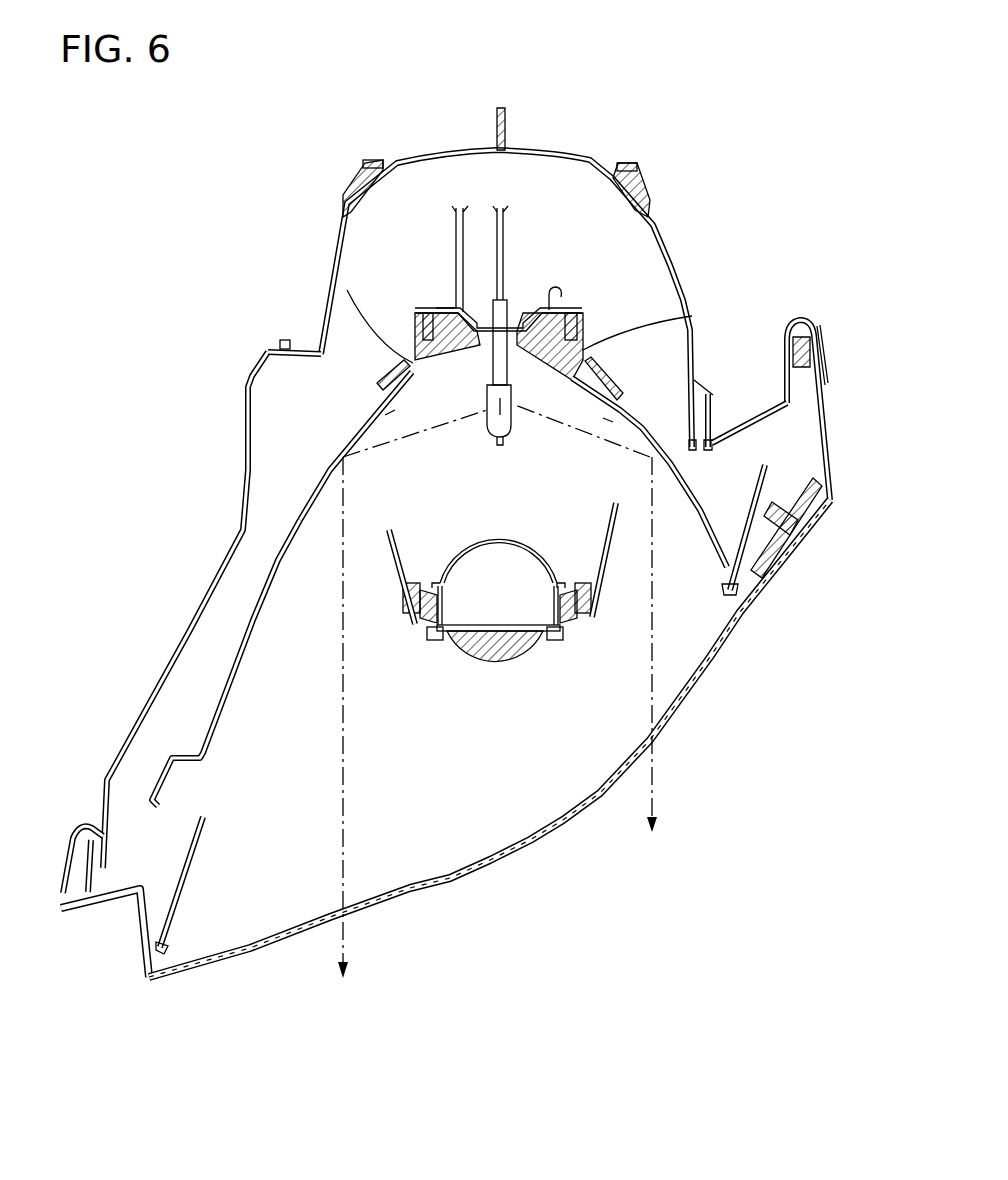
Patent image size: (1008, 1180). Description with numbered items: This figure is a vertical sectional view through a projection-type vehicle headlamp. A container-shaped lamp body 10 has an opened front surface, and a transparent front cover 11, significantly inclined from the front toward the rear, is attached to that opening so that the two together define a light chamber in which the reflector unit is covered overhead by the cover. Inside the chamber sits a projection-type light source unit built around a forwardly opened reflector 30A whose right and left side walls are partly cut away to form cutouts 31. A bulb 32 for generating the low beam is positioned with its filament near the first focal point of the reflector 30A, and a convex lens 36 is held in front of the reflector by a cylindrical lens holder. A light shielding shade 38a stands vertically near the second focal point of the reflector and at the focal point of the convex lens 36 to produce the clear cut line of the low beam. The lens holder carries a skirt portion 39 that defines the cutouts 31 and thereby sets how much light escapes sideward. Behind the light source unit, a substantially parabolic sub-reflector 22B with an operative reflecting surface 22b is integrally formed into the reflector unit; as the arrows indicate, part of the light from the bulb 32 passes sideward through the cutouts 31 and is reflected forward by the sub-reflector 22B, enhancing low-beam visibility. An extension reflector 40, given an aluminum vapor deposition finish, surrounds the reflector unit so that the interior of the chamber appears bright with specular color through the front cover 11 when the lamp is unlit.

The lamp body 10 is at (180, 653).
The transparent front cover 11 is at (487, 858).
The sub-reflector 22B is at (278, 563).
The operative reflecting surface 22b is at (360, 420).
The reflector 30A is at (397, 383).
The cutouts 31 is at (387, 410).
The bulb 32 is at (517, 395).
The convex lens 36 is at (530, 653).
The light shielding shade 38a is at (503, 545).
The skirt portion 39 is at (388, 548).
The extension reflector 40 is at (187, 893).